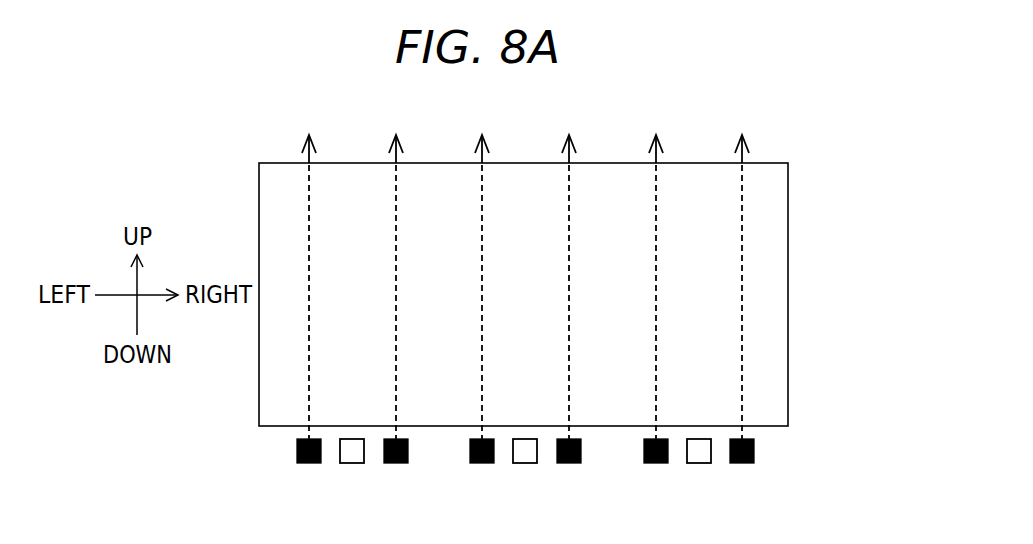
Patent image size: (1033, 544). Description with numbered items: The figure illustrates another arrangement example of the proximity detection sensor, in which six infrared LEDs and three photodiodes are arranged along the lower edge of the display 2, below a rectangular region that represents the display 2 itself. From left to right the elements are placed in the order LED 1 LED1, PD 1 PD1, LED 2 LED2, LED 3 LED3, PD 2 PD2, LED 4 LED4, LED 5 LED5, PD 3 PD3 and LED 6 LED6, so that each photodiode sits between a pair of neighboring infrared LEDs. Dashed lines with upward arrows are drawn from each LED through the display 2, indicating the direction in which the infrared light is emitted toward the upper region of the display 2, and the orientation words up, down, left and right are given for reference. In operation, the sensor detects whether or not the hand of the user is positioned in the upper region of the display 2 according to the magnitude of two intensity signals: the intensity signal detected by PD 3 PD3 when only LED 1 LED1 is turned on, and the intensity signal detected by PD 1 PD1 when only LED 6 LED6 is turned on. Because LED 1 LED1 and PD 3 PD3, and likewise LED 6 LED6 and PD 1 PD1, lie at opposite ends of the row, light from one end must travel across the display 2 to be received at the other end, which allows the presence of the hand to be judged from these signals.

The display 2 is at (788, 304).
The LED 1 LED1 is at (300, 471).
The LED 2 LED2 is at (407, 471).
The LED 3 LED3 is at (475, 471).
The LED 4 LED4 is at (578, 471).
The LED 5 LED5 is at (647, 471).
The LED 6 LED6 is at (753, 471).
The PD 1 PD1 is at (351, 471).
The PD 2 PD2 is at (527, 471).
The PD 3 PD3 is at (700, 471).